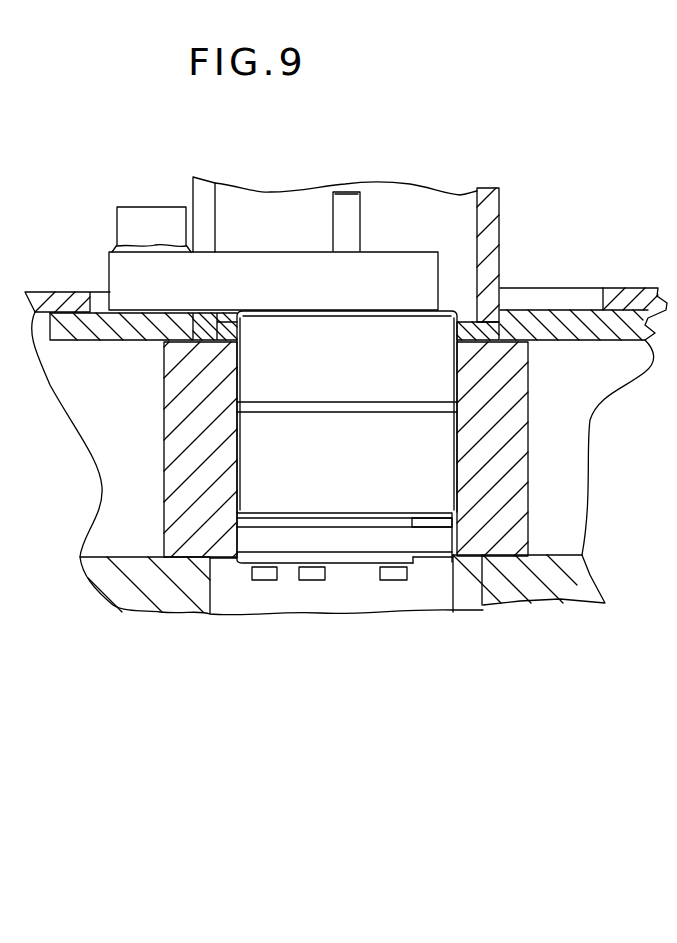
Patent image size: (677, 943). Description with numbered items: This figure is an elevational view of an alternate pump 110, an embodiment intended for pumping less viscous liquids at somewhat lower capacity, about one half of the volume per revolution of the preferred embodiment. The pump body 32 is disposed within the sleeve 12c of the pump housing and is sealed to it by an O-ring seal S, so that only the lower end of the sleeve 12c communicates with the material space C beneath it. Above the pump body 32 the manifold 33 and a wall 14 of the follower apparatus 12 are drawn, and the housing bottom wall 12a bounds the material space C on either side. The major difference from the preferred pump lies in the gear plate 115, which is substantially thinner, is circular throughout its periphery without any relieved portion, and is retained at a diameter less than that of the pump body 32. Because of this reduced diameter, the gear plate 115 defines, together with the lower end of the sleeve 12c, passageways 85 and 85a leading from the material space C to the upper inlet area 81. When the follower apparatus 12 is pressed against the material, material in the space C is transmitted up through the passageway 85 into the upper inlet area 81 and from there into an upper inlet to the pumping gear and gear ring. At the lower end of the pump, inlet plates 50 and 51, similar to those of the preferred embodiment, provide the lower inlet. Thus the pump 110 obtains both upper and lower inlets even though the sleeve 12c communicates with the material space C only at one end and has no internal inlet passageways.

The wall 14 is at (492, 213).
The follower apparatus 12 is at (625, 409).
The block 33 is at (125, 268).
The pump body 32 is at (253, 388).
The O-ring seal S is at (456, 406).
The alternate pump 110 is at (196, 457).
The sleeve 12c is at (503, 457).
The inlet plate 50 is at (247, 522).
The passageway 85a is at (240, 543).
The inlet plate 51 is at (237, 563).
The upper inlet area 81 is at (452, 522).
The housing bottom wall 12a is at (568, 582).
The material space C is at (297, 597).
The gear plate 115 is at (416, 557).
The passageway 85 is at (453, 553).